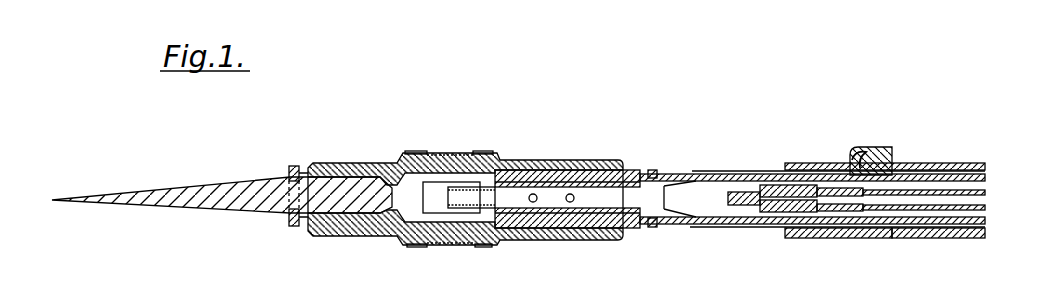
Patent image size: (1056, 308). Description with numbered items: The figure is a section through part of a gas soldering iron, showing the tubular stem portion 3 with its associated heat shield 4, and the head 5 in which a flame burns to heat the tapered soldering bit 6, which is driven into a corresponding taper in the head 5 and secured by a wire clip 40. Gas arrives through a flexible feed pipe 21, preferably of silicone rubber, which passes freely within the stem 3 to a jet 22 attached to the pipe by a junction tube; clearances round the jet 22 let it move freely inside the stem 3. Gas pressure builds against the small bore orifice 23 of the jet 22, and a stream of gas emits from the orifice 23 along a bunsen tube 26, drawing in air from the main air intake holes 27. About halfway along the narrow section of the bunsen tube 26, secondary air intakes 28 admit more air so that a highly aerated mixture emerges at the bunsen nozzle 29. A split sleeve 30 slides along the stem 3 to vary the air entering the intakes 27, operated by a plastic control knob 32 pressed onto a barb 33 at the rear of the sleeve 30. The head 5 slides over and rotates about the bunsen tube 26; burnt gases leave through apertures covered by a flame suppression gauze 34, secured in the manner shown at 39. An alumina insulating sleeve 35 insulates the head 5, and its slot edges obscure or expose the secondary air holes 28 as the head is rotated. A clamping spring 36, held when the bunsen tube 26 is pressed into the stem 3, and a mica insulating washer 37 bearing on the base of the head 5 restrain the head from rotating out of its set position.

The tubular stem portion 3 is at (985, 224).
The heat shield 4 is at (860, 237).
The head 5 is at (387, 160).
The soldering bit 6 is at (177, 184).
The flexible feed pipe 21 is at (985, 200).
The jet 22 is at (773, 185).
The small bore orifice 23 is at (725, 198).
The bunsen tube 26 is at (583, 178).
The main air intake holes 27 is at (720, 175).
The secondary air intakes 28 is at (533, 202).
The bunsen nozzle 29 is at (449, 197).
The split sleeve 30 is at (792, 164).
The plastic control knob 32 is at (892, 150).
The barb 33 is at (855, 150).
The flame suppression gauze 34 is at (440, 153).
The insulating sleeve 35 is at (542, 170).
The spring 36 is at (655, 170).
The insulating washer 37 is at (636, 229).
The gauze securing flange 39 is at (413, 152).
The wire clip 40 is at (295, 227).